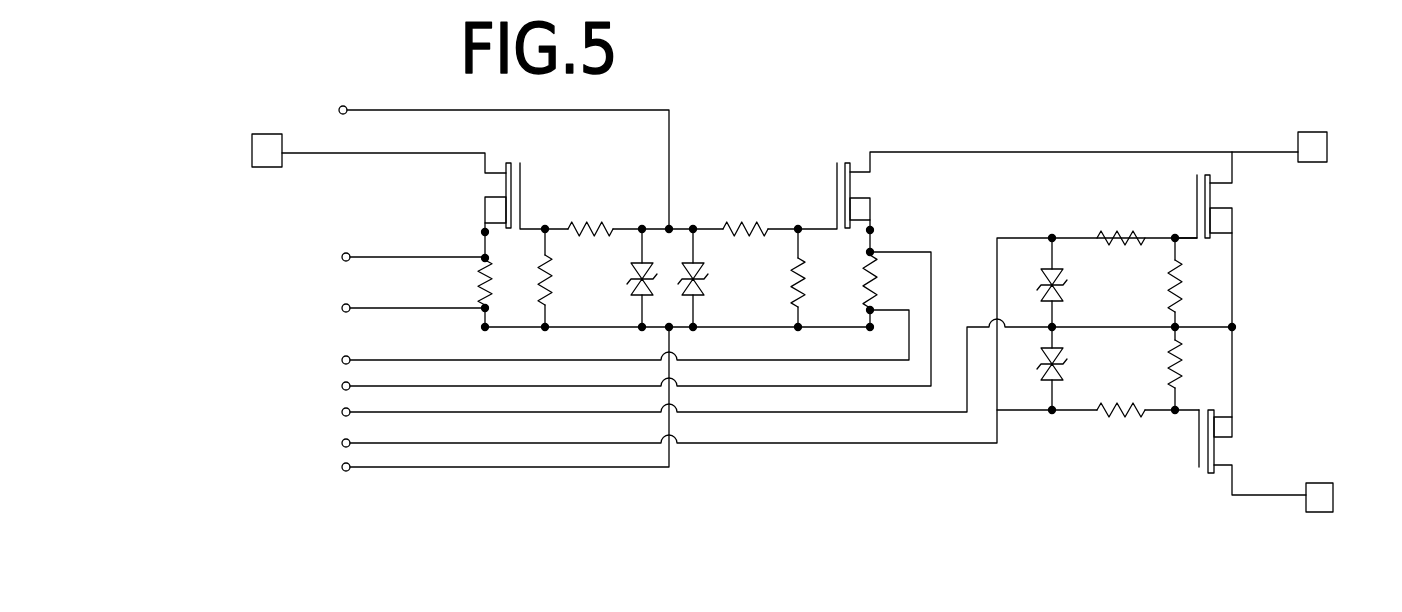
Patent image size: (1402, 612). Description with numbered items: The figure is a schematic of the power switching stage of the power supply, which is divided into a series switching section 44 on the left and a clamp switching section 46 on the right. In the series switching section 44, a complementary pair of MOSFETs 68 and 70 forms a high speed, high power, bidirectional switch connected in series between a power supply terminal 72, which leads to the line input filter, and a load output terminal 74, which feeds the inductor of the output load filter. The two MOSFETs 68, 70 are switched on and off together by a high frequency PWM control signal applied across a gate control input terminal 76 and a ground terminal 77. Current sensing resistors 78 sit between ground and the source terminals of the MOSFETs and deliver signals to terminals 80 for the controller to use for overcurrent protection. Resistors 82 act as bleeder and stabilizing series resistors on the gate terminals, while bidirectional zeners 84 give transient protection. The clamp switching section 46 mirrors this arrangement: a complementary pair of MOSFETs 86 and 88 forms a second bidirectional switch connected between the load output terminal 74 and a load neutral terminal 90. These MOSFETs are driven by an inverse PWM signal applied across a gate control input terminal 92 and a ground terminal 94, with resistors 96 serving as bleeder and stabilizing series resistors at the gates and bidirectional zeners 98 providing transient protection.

The series switching section 44 is at (763, 110).
The clamp switching section 46 is at (1242, 117).
The MOSFET 68 is at (527, 165).
The MOSFET 70 is at (830, 164).
The power supply terminal 72 is at (265, 134).
The load output terminal 74 is at (1328, 158).
The gate control input terminal 76 is at (343, 106).
The ground terminal 77 is at (342, 469).
The current sensing resistors 78 is at (480, 272).
The terminals 80 is at (341, 257).
The resistors 82 is at (604, 220).
The bidirectional zeners 84 is at (632, 276).
The MOSFET 86 is at (1193, 190).
The MOSFET 88 is at (1195, 465).
The load neutral terminal 90 is at (1334, 500).
The gate control input terminal 92 is at (341, 445).
The ground terminal 94 is at (341, 413).
The resistors 96 is at (1140, 230).
The bidirectional zeners 98 is at (1065, 305).